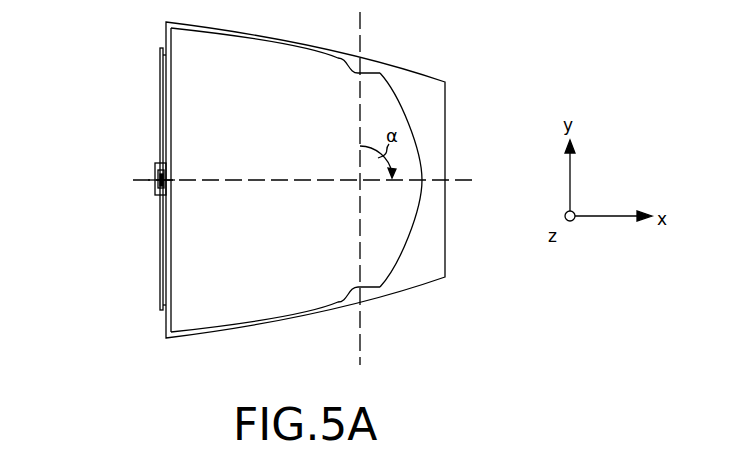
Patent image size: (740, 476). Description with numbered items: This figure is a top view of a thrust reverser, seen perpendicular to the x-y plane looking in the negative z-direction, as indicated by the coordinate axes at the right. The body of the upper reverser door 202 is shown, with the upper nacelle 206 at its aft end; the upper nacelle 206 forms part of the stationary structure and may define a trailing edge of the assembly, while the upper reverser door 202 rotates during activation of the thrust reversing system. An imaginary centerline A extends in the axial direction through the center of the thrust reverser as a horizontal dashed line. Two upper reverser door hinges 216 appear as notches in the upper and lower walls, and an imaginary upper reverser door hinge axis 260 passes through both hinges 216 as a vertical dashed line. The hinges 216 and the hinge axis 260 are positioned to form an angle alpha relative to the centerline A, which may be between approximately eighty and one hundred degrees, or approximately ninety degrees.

The upper reverser door 202 is at (266, 148).
The upper nacelle 206 is at (436, 156).
The upper reverser door hinges 216 is at (360, 56).
The upper reverser door hinge axis 260 is at (358, 262).
The centerline A is at (125, 180).